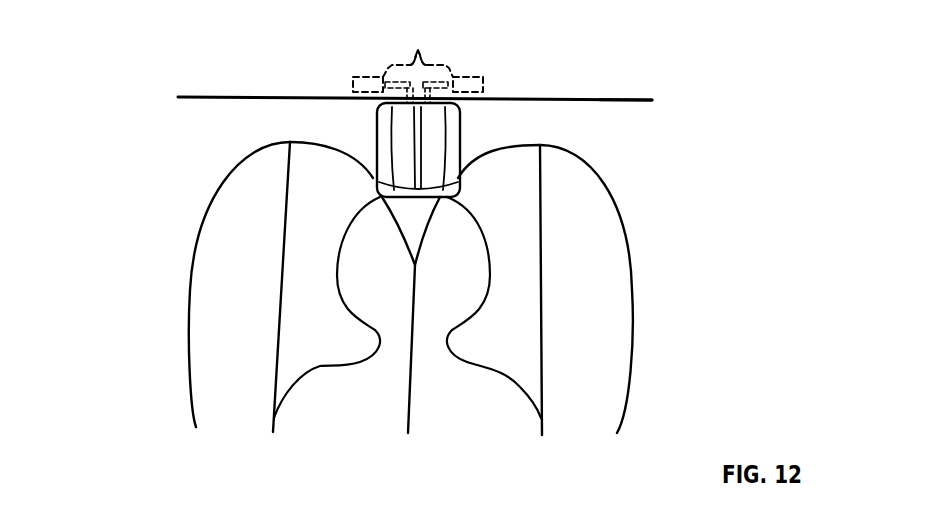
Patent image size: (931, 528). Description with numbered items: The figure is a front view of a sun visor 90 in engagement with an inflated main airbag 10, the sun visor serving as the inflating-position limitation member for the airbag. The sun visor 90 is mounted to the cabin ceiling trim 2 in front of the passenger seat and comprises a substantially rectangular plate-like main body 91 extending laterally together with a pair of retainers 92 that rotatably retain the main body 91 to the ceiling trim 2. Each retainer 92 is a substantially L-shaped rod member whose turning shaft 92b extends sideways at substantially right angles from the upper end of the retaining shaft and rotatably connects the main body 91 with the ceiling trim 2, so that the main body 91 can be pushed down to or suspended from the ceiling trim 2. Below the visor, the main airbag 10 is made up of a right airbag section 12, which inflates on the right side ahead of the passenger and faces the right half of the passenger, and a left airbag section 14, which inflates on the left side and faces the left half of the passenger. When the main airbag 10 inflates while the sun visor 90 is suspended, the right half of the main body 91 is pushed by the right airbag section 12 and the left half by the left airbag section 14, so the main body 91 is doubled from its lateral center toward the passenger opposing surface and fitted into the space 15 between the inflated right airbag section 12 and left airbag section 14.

The ceiling trim 2 is at (618, 100).
The main airbag 10 is at (431, 288).
The right airbag section 12 is at (612, 322).
The left airbag section 14 is at (200, 318).
The space 15 is at (420, 229).
The sun visor 90 is at (488, 112).
The main body 91 is at (376, 125).
The retainers 92 is at (371, 73).
The turning shaft 92b is at (420, 45).